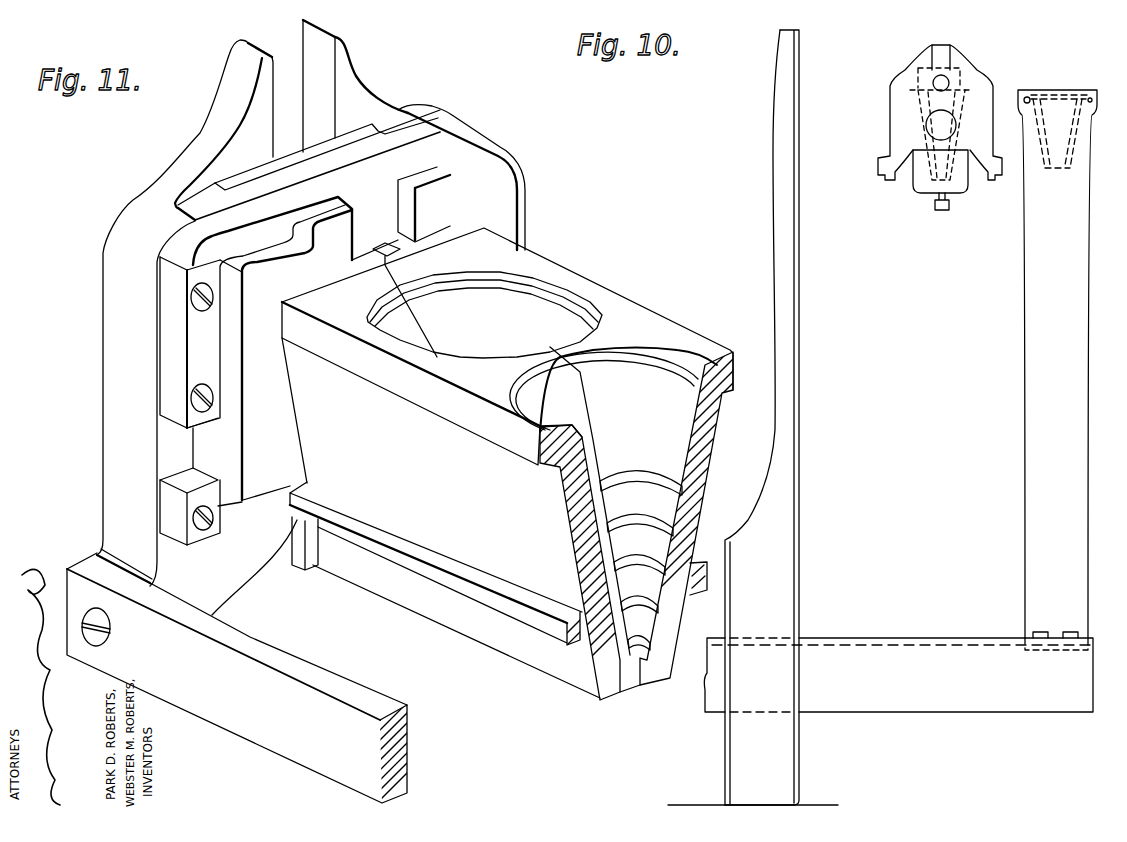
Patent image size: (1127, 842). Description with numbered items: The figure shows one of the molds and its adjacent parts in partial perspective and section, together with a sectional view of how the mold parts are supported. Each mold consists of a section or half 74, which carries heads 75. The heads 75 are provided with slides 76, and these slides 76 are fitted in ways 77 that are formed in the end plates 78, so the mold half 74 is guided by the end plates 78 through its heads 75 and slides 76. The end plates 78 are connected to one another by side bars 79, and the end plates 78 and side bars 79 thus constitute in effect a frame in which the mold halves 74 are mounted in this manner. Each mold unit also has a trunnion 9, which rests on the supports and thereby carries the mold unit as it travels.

In FIG. 11, the mold section 74 is at (333, 353).
In FIG. 11, the heads 75 is at (253, 431).
In FIG. 11, the slides 76 is at (205, 455).
In FIG. 11, the ways 77 is at (165, 432).
In FIG. 11, the end plates 78 is at (138, 208).
In FIG. 10, the end plates 78 is at (888, 96).
In FIG. 11, the side bars 79 is at (333, 683).
In FIG. 10, the trunnion 9 is at (930, 122).